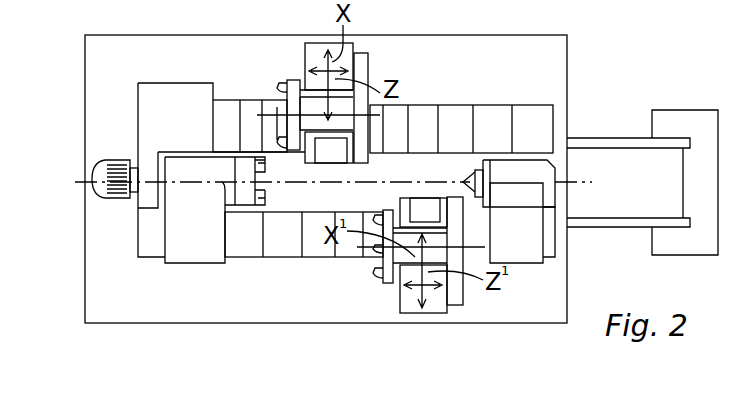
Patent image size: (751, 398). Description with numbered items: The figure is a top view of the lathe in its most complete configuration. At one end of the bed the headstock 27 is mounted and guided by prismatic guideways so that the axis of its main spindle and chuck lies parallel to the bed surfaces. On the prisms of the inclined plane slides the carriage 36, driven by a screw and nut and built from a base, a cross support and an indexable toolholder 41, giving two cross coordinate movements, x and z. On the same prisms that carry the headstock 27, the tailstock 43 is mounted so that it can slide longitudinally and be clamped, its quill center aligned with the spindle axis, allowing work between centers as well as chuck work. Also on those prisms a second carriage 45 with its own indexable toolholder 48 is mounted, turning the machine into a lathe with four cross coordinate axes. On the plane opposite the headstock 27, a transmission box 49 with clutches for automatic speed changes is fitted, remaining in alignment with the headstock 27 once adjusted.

The transmission box 49 is at (158, 100).
The indexable toolholder 41 is at (290, 87).
The carriage 36 is at (314, 53).
The tailstock 43 is at (510, 172).
The headstock 27 is at (197, 252).
The indexable toolholder 48 is at (388, 273).
The second carriage 45 is at (437, 302).